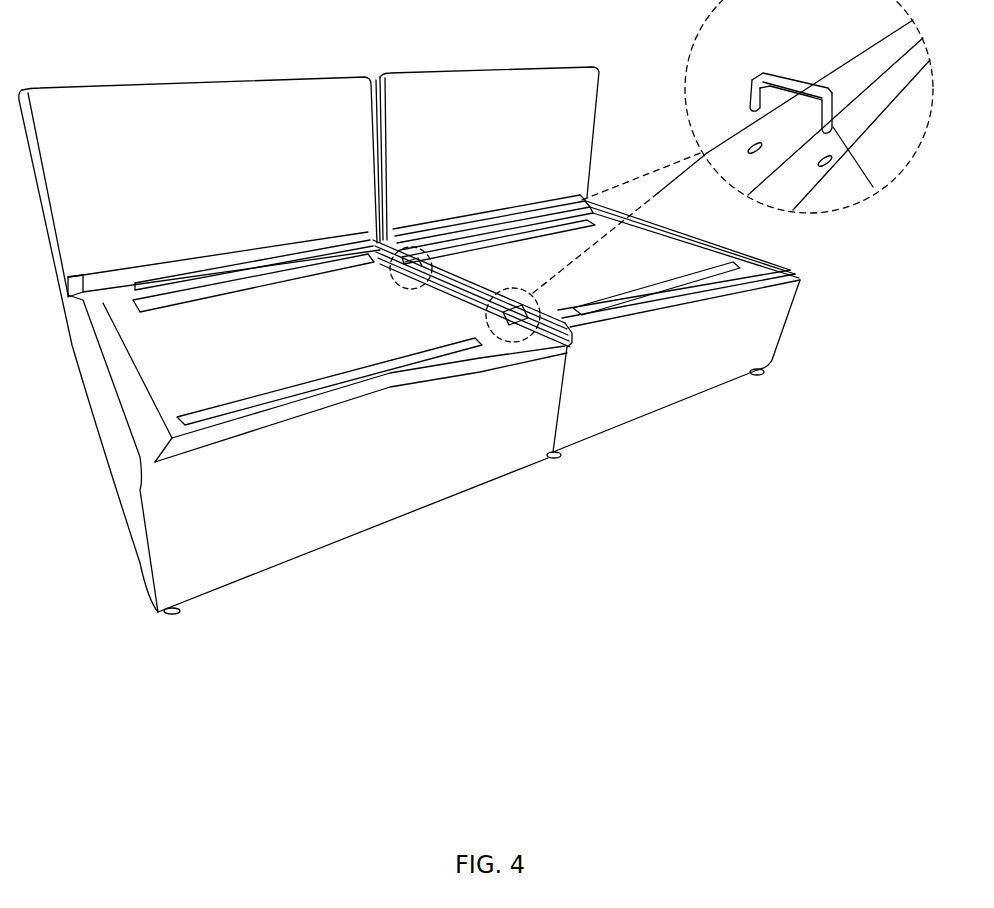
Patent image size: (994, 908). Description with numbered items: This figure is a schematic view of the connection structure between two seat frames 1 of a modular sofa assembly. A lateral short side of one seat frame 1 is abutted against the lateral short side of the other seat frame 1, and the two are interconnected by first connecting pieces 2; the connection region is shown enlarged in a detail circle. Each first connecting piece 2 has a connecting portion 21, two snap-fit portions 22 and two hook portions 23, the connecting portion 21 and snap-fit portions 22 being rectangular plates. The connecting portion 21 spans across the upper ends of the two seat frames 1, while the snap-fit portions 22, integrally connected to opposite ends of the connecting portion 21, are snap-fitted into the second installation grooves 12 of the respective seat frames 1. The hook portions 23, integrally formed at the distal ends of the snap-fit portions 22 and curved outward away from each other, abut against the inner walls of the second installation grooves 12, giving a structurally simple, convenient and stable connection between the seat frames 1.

The seat frame 1 is at (350, 518).
The first connecting piece 2 is at (642, 174).
The second installation groove 12 is at (762, 165).
The connecting portion 21 is at (787, 80).
The snap-fit portion 22 is at (750, 88).
The hook portion 23 is at (833, 125).